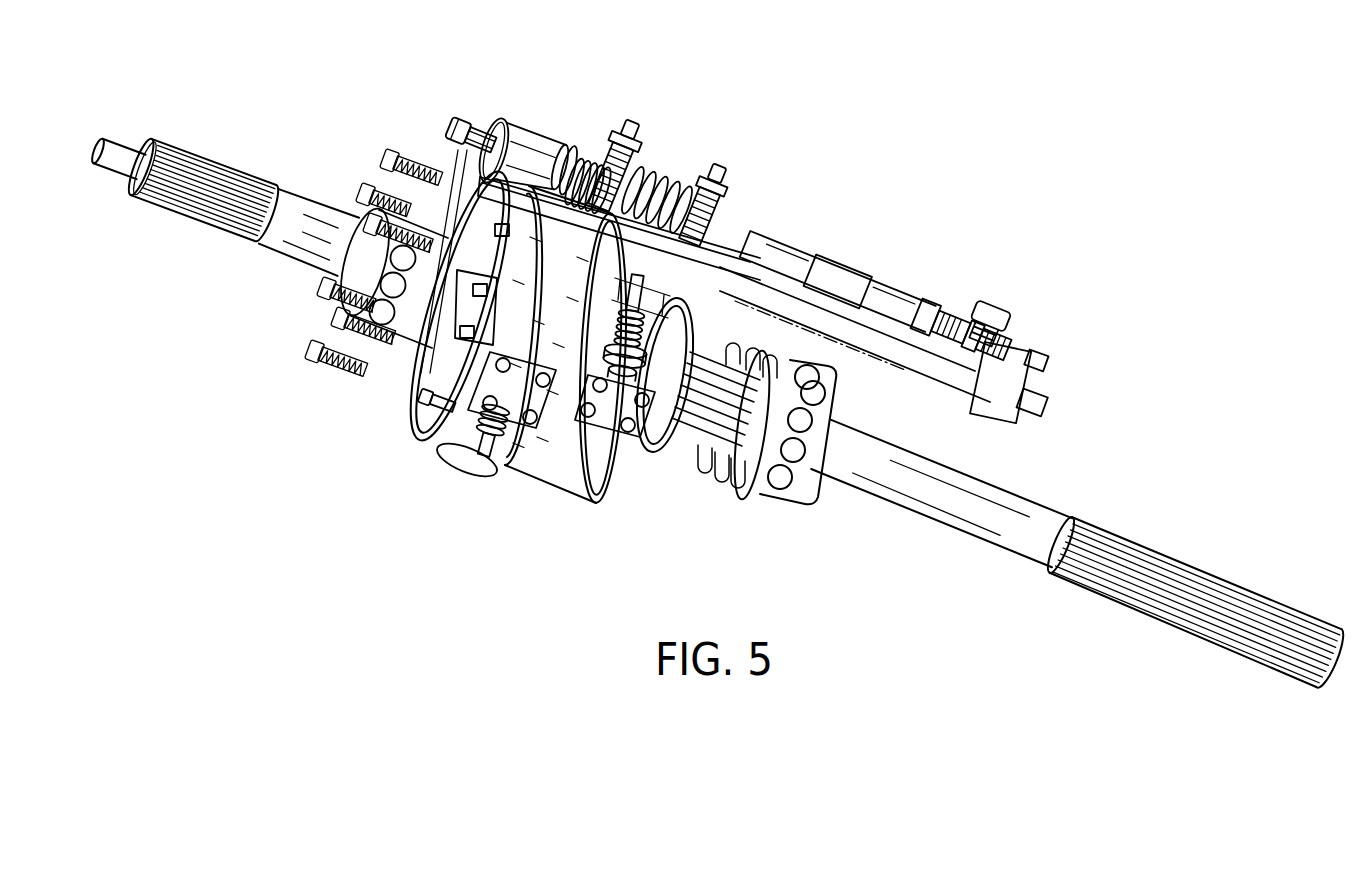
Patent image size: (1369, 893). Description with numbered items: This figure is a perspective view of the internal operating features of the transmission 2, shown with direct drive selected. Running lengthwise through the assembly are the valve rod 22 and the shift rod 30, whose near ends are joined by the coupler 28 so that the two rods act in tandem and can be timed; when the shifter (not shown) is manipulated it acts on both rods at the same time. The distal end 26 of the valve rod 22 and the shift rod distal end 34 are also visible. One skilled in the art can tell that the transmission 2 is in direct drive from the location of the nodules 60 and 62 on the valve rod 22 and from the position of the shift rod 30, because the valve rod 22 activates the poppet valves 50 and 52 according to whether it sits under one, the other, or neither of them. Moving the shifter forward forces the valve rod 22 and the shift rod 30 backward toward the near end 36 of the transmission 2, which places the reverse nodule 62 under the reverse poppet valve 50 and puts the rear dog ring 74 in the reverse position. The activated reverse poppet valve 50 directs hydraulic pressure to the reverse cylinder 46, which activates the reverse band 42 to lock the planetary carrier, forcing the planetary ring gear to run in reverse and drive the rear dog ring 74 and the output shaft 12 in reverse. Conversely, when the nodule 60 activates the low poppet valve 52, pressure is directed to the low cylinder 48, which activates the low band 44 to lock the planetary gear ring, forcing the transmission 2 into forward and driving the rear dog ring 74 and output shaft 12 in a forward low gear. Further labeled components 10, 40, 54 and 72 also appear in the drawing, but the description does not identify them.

The transmission 2 is at (918, 175).
The input shaft 10 is at (213, 143).
The output shaft 12 is at (1113, 600).
The valve rod 22 is at (921, 362).
The distal end of the valve rod 26 is at (452, 168).
The coupler 28 is at (1037, 343).
The shift rod 30 is at (945, 312).
The shift rod distal end 34 is at (466, 118).
The near end of the transmission 36 is at (1157, 683).
The hub clamp 40 is at (407, 157).
The reverse band 42 is at (440, 410).
The low band 44 is at (545, 478).
The reverse cylinder 46 is at (488, 442).
The low cylinder 48 is at (588, 497).
The reverse poppet valve 50 is at (647, 173).
The low poppet valve 52 is at (738, 205).
The bearing 54 is at (694, 456).
The nodule 60 is at (674, 178).
The reverse nodule 62 is at (548, 155).
The bolt 72 is at (394, 353).
The rear dog ring 74 is at (660, 452).